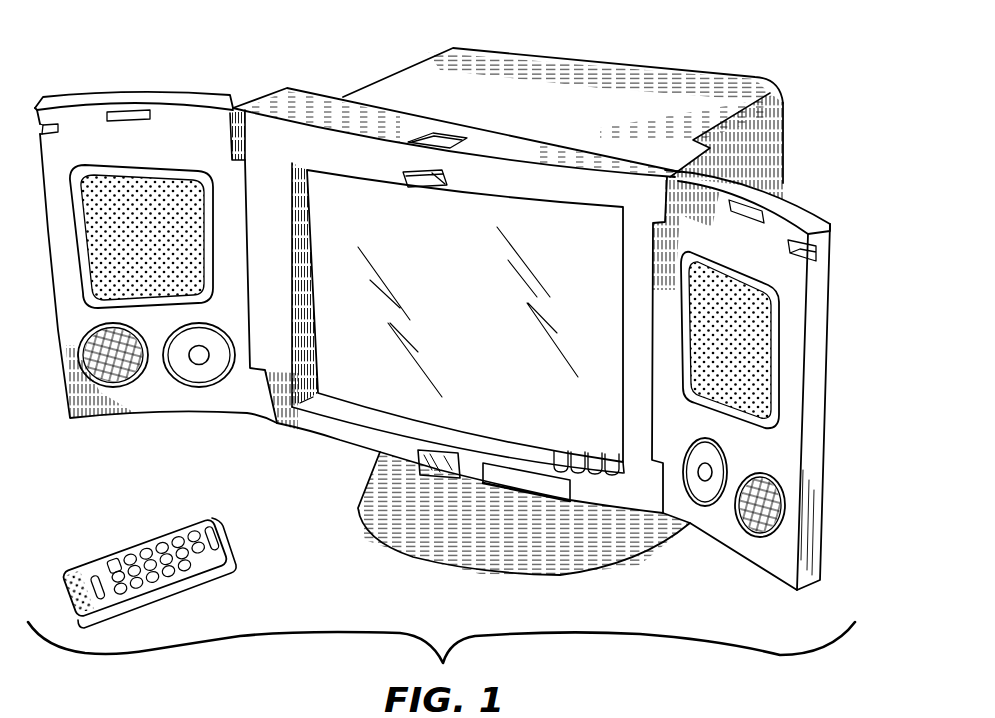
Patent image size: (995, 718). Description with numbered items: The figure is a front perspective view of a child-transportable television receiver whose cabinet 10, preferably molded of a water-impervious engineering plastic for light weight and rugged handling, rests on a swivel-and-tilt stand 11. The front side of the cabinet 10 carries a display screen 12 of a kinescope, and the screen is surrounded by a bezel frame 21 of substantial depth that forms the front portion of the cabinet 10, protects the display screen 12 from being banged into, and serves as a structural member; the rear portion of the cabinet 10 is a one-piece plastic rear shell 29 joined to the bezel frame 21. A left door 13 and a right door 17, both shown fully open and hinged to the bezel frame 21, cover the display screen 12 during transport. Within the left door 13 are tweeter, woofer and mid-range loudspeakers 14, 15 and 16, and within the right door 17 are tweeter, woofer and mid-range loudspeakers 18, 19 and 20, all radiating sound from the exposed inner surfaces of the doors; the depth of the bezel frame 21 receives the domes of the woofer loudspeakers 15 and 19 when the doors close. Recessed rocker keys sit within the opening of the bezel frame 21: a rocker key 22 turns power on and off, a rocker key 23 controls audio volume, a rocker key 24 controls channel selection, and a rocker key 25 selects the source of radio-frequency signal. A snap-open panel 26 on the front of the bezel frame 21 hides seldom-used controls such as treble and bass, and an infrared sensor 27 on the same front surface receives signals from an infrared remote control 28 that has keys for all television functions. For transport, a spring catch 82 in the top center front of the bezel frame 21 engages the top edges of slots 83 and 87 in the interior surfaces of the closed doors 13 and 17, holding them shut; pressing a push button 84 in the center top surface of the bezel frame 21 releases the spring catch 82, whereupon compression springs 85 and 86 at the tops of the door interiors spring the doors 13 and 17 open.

The cabinet 10 is at (233, 92).
The swivel-and-tilt stand 11 is at (650, 538).
The display screen 12 is at (474, 316).
The left door 13 is at (77, 117).
The tweeter loudspeaker 14 is at (188, 380).
The woofer loudspeaker 15 is at (97, 270).
The mid-range loudspeaker 16 is at (100, 380).
The right door 17 is at (708, 195).
The tweeter loudspeaker 18 is at (710, 494).
The woofer loudspeaker 19 is at (773, 410).
The mid-range loudspeaker 20 is at (760, 533).
The bezel frame 21 is at (274, 425).
The rocker key 22 is at (489, 465).
The rocker key 23 is at (569, 474).
The rocker key 24 is at (582, 476).
The rocker key 25 is at (614, 474).
The snap-open panel 26 is at (484, 484).
The infrared sensor 27 is at (378, 453).
The infrared remote control 28 is at (187, 580).
The rear shell 29 is at (548, 62).
The spring catch 82 is at (445, 183).
The slot 83 is at (43, 134).
The push button 84 is at (440, 133).
The compression spring 85 is at (130, 108).
The compression spring 86 is at (757, 210).
The slot 87 is at (808, 262).